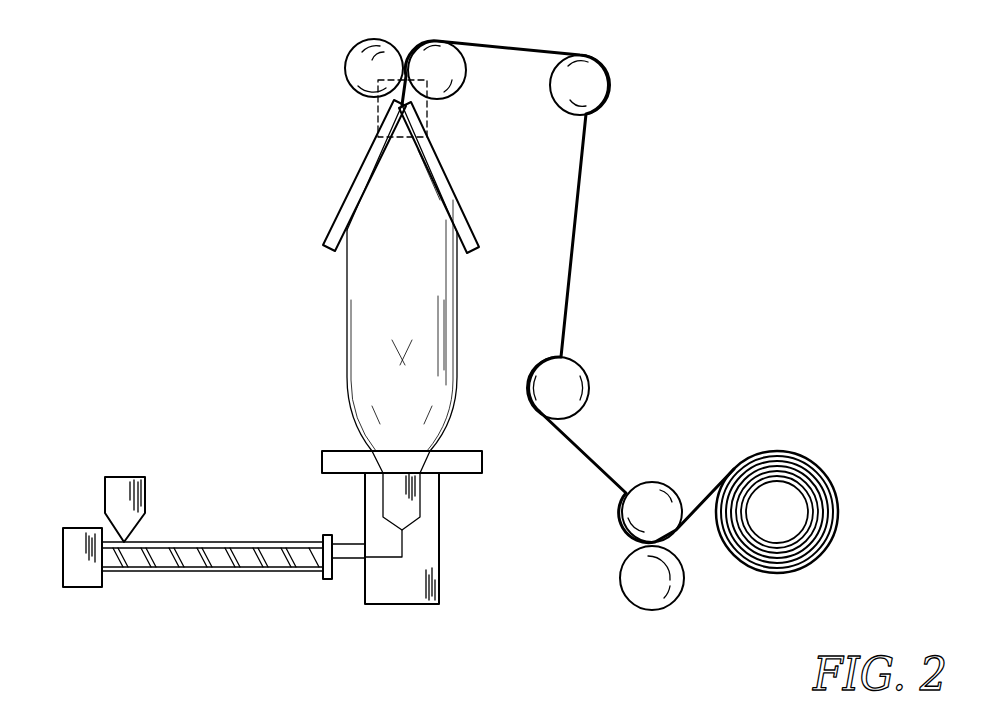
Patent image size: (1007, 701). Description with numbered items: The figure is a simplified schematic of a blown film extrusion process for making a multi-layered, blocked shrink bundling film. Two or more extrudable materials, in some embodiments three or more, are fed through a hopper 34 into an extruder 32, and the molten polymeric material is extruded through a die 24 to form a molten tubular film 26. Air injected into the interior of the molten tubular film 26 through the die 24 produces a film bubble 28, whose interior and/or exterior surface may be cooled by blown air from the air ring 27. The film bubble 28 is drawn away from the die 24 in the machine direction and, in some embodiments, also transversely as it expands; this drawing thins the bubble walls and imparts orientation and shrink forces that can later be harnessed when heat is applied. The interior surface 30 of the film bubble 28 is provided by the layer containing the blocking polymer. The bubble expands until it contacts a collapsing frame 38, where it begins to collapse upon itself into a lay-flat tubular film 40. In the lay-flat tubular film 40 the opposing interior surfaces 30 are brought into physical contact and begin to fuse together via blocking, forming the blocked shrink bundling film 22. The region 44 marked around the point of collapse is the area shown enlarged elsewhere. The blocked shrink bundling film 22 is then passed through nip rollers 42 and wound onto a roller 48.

The blocked shrink bundling film 22 is at (575, 252).
The die 24 is at (439, 584).
The molten tubular film 26 is at (418, 492).
The air ring 27 is at (313, 460).
The film bubble 28 is at (344, 289).
The interior surface 30 is at (348, 327).
The extruder 32 is at (187, 562).
The hopper 34 is at (103, 495).
The collapsing frame 38 is at (330, 242).
The lay-flat tubular film 40 is at (413, 98).
The nip rollers 42 is at (360, 66).
The region 44 is at (377, 102).
The roller 48 is at (778, 518).